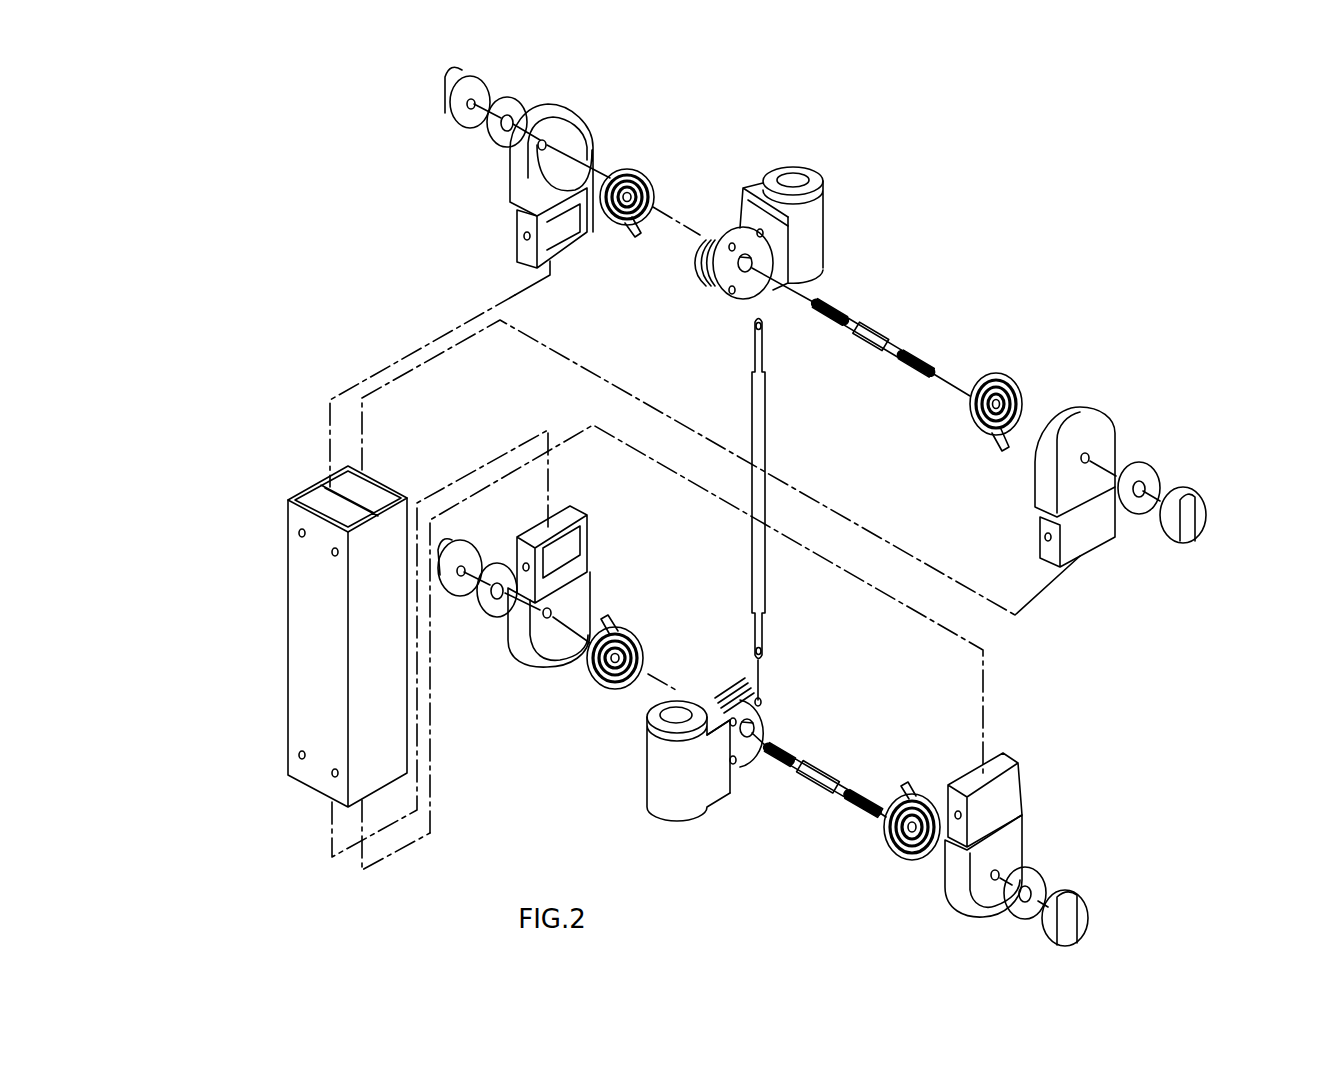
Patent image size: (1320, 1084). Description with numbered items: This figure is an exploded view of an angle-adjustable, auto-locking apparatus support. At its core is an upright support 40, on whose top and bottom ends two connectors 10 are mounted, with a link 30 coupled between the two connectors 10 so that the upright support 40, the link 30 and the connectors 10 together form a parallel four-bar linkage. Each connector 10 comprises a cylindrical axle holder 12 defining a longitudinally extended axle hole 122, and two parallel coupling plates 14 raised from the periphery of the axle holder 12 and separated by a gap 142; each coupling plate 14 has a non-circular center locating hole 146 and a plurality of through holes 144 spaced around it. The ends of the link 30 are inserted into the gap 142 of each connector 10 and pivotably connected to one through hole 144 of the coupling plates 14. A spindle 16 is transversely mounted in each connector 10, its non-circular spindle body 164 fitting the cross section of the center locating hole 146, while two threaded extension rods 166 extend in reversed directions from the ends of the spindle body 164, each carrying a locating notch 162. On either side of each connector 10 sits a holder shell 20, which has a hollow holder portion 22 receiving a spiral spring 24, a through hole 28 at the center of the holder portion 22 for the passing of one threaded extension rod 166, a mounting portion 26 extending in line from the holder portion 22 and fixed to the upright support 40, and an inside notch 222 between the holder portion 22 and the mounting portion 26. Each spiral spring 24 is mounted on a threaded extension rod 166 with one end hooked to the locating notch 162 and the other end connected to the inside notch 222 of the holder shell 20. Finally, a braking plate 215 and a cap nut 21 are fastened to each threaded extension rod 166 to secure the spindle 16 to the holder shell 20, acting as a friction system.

The connector 10 is at (840, 162).
The cylindrical axle holder 12 is at (818, 228).
The axle hole 122 is at (792, 178).
The coupling plate 14 is at (732, 520).
The gap 142 is at (713, 237).
The through hole 144 is at (732, 302).
The non-circular center locating hole 146 is at (748, 272).
The spindle 16 is at (886, 568).
The locating notch 162 is at (917, 350).
The non-circular spindle body 164 is at (867, 338).
The threaded extension rod 166 is at (893, 353).
The holder shell 20 is at (613, 145).
The cap nut 21 is at (443, 98).
The braking plate 215 is at (492, 130).
The hollow holder portion 22 is at (543, 158).
The inside notch 222 is at (577, 230).
The spiral spring 24 is at (643, 178).
The mounting portion 26 is at (523, 247).
The through hole 28 is at (1092, 458).
The link 30 is at (766, 446).
The upright support 40 is at (296, 632).